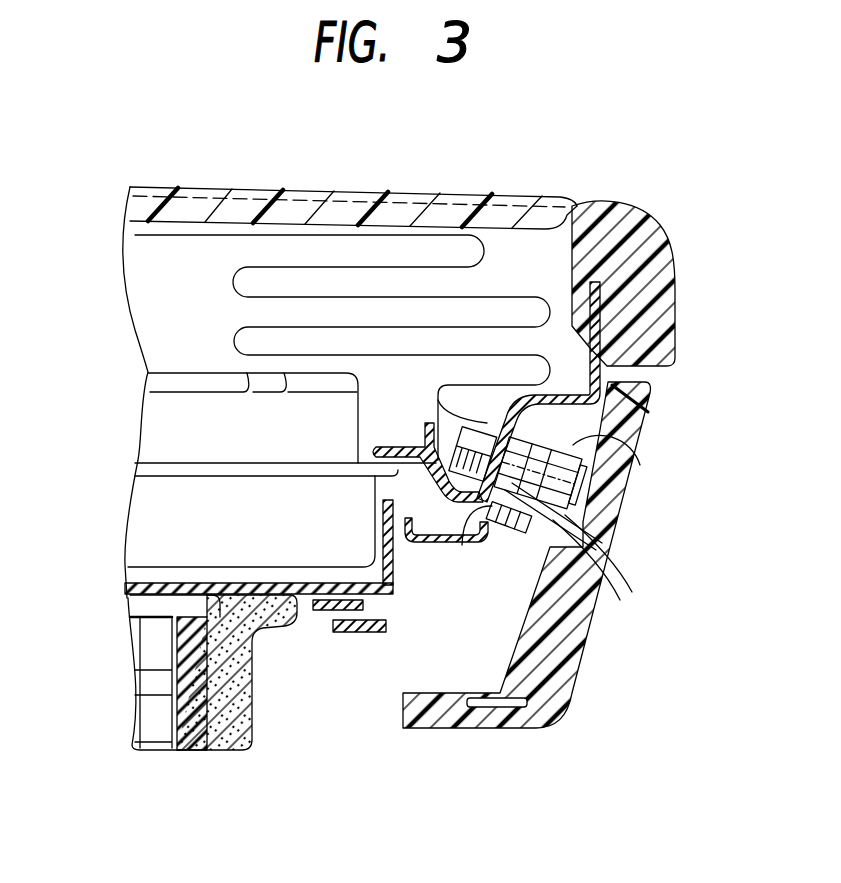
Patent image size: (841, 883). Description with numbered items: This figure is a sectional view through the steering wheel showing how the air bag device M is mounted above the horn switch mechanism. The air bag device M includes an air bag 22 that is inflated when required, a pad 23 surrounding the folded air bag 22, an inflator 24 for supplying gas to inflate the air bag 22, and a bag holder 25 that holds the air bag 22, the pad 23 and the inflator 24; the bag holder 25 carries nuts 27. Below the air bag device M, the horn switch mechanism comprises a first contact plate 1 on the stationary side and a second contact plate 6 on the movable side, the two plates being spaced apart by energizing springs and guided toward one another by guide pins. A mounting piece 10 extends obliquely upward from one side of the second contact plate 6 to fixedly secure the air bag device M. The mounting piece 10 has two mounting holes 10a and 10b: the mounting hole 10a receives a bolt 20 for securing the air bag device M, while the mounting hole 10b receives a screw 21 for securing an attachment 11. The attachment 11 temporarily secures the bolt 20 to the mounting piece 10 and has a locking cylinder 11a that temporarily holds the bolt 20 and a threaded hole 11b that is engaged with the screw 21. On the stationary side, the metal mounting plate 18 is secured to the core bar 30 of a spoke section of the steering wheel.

The first contact plate 1 is at (323, 612).
The second contact plate 6 is at (430, 545).
The mounting piece 10 is at (492, 522).
The mounting hole 10a is at (620, 490).
The mounting hole 10b is at (552, 592).
The attachment 11 is at (606, 552).
The locking cylinder 11a is at (620, 518).
The threaded hole 11b is at (556, 550).
The mounting plate 18 is at (360, 635).
The bolt 20 is at (615, 417).
The screw 21 is at (468, 515).
The air bag 22 is at (148, 234).
The pad 23 is at (303, 206).
The inflator 24 is at (137, 495).
The bag holder 25 is at (396, 486).
The nut 27 is at (440, 396).
The core bar 30 is at (285, 625).
The air bag device M is at (124, 446).